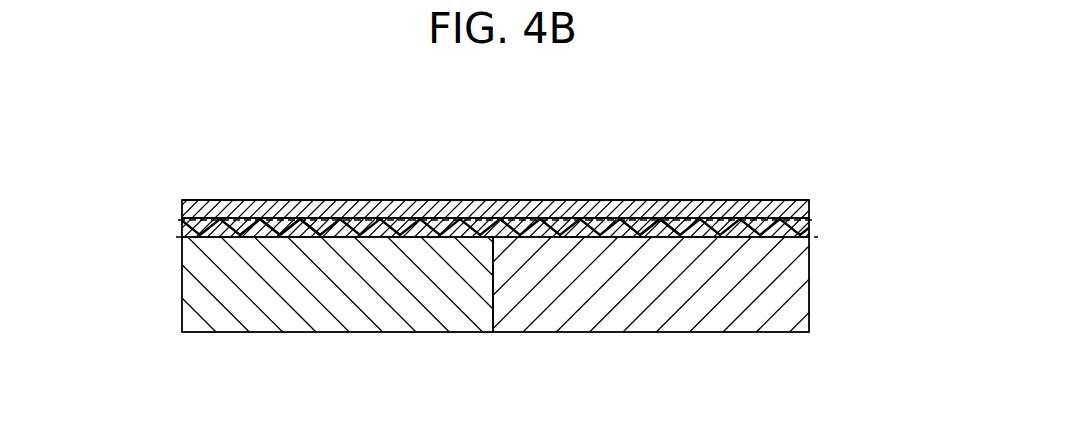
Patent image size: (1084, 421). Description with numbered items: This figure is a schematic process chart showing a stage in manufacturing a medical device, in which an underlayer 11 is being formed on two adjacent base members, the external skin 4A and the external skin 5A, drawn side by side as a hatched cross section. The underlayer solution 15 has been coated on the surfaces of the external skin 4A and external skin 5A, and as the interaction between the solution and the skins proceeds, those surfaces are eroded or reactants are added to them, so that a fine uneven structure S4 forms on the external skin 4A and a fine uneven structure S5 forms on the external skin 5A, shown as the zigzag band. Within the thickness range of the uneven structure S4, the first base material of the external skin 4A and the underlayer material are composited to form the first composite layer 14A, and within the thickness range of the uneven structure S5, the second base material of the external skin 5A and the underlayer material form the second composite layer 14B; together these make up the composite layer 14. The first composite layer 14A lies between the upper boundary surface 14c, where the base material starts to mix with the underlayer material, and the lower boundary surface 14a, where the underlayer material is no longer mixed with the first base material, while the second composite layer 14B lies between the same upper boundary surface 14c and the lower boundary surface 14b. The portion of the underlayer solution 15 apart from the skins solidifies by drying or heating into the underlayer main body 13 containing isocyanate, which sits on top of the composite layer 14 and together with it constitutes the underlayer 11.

The underlayer 11 is at (642, 196).
The underlayer solution 15 is at (495, 154).
The underlayer main body 13 is at (814, 193).
The composite layer 14 is at (494, 255).
The first composite layer 14A is at (813, 219).
The second composite layer 14B is at (178, 219).
The lower boundary surface 14a is at (667, 239).
The lower boundary surface 14b is at (295, 238).
The upper boundary surface 14c is at (260, 218).
The external skin 4A is at (788, 293).
The external skin 5A is at (190, 303).
The uneven structure S4 is at (598, 238).
The uneven structure S5 is at (393, 238).